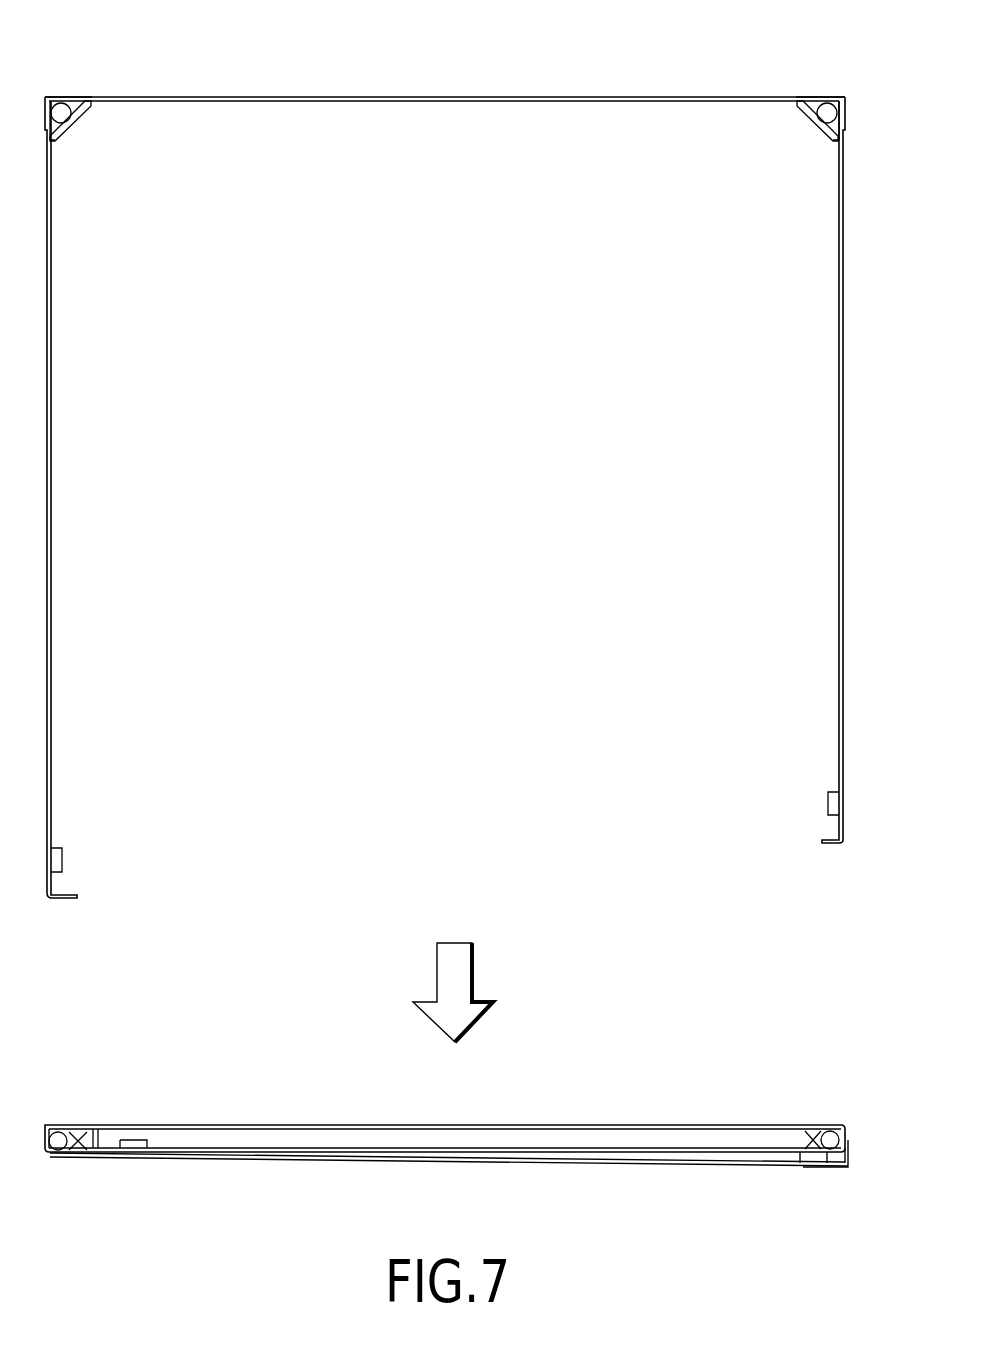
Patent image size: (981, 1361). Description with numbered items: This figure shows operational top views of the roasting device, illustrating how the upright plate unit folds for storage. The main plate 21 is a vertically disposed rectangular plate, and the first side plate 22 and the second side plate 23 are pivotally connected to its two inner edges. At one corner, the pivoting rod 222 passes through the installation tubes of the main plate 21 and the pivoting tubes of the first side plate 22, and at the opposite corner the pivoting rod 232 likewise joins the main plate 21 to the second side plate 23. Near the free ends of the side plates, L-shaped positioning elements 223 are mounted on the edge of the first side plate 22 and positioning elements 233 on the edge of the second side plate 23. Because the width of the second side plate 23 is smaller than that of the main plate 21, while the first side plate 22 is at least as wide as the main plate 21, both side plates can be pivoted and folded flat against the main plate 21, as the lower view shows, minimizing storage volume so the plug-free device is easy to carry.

The main plate 21 is at (445, 80).
The first side plate 22 is at (60, 498).
The second side plate 23 is at (820, 500).
The pivoting rod 222 is at (62, 110).
The pivoting rod 232 is at (828, 112).
The positioning elements 223 is at (51, 862).
The positioning elements 233 is at (839, 803).